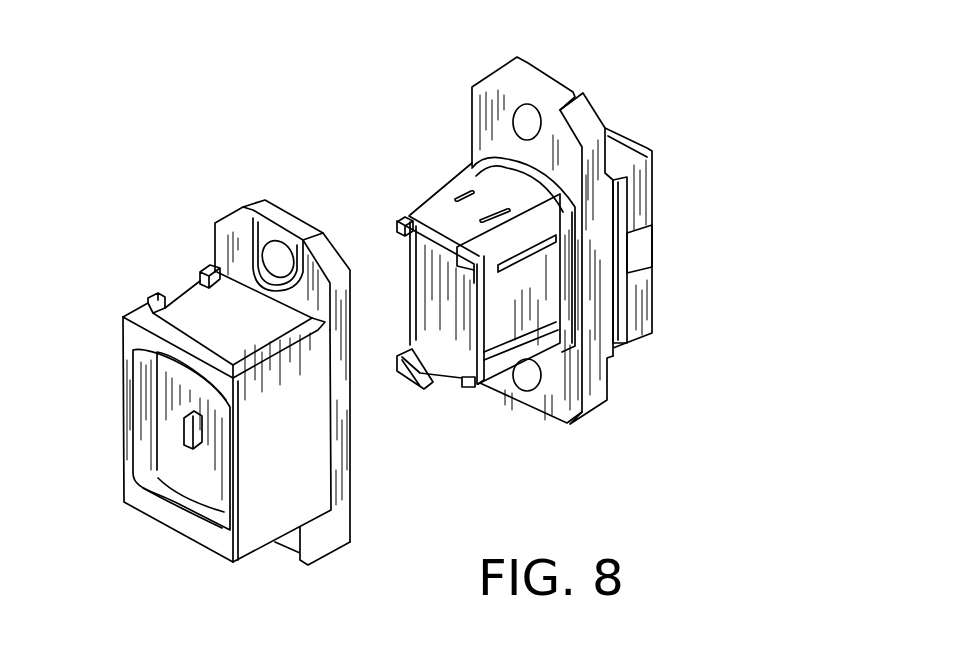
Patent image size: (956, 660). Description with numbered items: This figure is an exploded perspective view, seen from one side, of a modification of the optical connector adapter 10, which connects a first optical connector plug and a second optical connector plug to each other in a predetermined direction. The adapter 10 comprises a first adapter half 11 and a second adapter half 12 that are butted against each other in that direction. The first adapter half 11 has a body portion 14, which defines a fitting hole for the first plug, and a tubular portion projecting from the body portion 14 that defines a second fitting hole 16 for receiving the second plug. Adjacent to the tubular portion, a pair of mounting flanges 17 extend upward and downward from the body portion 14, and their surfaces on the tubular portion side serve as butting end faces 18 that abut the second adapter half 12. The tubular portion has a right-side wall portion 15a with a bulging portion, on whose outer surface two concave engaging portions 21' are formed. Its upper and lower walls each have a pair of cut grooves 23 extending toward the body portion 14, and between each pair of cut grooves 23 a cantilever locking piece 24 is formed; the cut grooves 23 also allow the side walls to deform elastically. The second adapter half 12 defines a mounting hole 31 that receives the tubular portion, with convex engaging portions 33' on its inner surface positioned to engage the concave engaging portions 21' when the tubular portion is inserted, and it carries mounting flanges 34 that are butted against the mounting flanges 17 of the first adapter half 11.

The optical connector adapter 10 is at (65, 263).
The first adapter half 11 is at (641, 348).
The second adapter half 12 is at (269, 541).
The body portion 14 is at (620, 357).
The right-side wall portion 15a is at (549, 314).
The second fitting hole 16 is at (422, 300).
The mounting flanges 17 is at (483, 75).
The butting end faces 18 is at (480, 115).
The engaging portions 21' is at (564, 253).
The cut grooves 23 is at (468, 232).
The cantilever locking piece 24 is at (405, 217).
The mounting hole 31 is at (186, 483).
The engaging portions 33' is at (140, 439).
The mounting flanges 34 is at (270, 213).